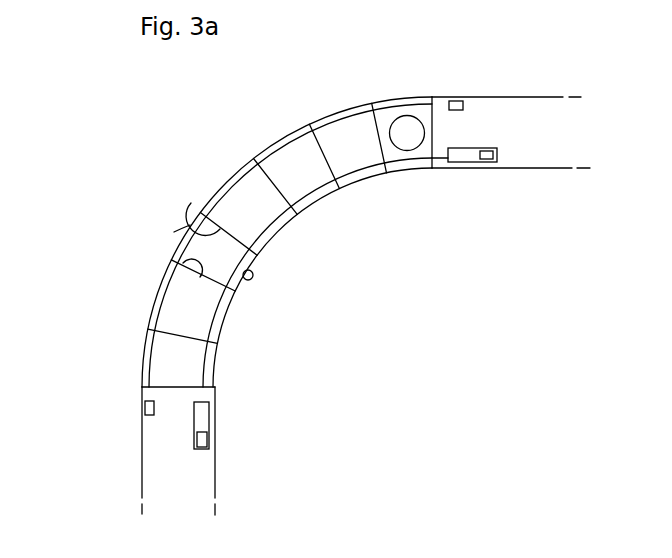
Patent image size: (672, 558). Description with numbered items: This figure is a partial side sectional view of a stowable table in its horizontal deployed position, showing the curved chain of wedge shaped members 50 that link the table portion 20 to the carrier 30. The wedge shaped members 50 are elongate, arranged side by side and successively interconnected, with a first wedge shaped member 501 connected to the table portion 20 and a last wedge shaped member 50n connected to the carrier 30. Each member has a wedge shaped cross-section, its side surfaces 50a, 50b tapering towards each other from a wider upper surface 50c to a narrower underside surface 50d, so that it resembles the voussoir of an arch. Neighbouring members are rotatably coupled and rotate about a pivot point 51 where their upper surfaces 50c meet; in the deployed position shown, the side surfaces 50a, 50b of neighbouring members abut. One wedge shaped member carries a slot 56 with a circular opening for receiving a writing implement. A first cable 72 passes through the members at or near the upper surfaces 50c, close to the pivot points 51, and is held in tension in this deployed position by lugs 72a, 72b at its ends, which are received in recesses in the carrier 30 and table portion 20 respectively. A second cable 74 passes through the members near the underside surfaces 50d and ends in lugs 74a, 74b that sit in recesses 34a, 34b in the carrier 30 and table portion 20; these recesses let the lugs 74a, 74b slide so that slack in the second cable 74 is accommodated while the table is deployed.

The table portion 20 is at (538, 115).
The carrier 30 is at (188, 482).
The recess 34a is at (209, 412).
The recess 34b is at (466, 162).
The wedge shaped member 50 is at (166, 200).
The side surface 50a is at (171, 261).
The side surface 50b is at (197, 217).
The upper surface 50c is at (181, 241).
The underside surface 50d is at (254, 278).
The last wedge shaped member 50n is at (214, 366).
The first wedge shaped member 501 is at (401, 96).
The pivot point 51 is at (204, 206).
The slot 56 is at (415, 153).
The first cable 72 is at (281, 140).
The lug 72a is at (145, 408).
The lug 72b is at (457, 101).
The second cable 74 is at (312, 198).
The lug 74a is at (207, 440).
The lug 74b is at (493, 160).